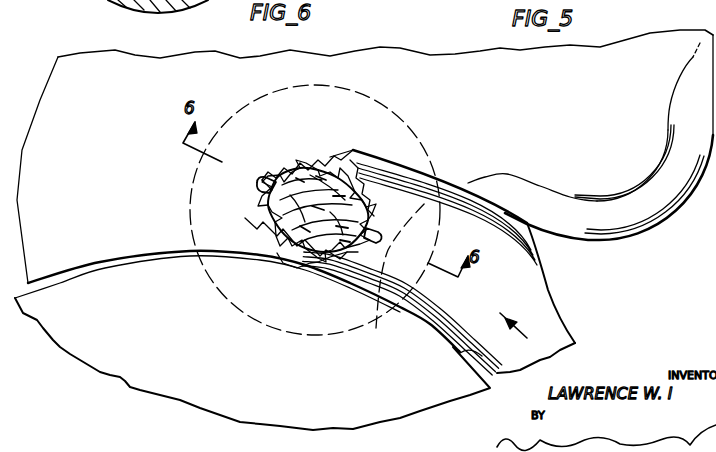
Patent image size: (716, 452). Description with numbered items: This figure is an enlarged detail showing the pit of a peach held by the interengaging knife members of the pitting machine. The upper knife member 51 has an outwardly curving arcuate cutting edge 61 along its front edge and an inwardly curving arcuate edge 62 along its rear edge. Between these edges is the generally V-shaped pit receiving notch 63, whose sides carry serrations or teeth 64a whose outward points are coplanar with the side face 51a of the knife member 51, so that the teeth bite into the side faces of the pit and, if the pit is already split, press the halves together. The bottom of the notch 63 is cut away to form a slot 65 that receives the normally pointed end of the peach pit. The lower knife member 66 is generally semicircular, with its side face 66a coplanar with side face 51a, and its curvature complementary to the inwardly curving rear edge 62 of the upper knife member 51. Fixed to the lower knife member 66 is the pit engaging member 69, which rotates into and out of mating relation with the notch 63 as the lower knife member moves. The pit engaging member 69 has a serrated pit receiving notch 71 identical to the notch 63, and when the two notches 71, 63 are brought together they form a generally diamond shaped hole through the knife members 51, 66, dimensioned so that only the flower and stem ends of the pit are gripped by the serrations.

The knife member 51 is at (590, 145).
The side face 51a is at (371, 132).
The arcuate cutting edge 61 is at (677, 202).
The arcuate edge 62 is at (103, 262).
The pit receiving notch 63 is at (315, 203).
The serrations 64a is at (292, 164).
The slot 65 is at (257, 186).
The lower knife member 66 is at (420, 408).
The side face 66a is at (378, 374).
The pit engaging member 69 is at (527, 284).
The serrated pit receiving notch 71 is at (380, 208).